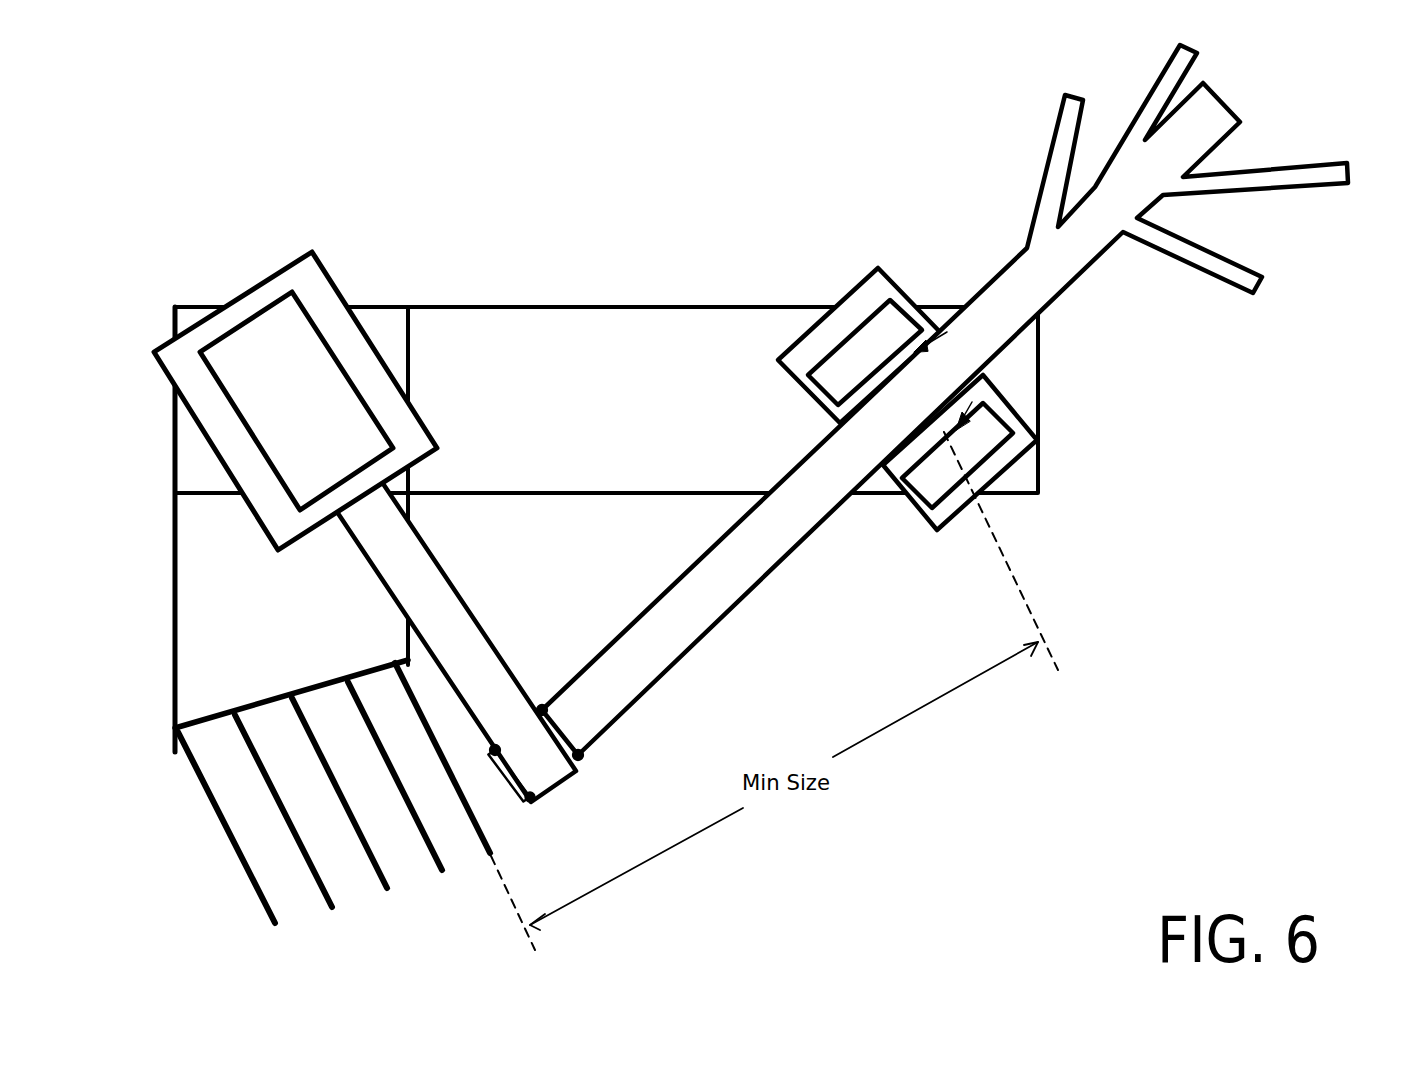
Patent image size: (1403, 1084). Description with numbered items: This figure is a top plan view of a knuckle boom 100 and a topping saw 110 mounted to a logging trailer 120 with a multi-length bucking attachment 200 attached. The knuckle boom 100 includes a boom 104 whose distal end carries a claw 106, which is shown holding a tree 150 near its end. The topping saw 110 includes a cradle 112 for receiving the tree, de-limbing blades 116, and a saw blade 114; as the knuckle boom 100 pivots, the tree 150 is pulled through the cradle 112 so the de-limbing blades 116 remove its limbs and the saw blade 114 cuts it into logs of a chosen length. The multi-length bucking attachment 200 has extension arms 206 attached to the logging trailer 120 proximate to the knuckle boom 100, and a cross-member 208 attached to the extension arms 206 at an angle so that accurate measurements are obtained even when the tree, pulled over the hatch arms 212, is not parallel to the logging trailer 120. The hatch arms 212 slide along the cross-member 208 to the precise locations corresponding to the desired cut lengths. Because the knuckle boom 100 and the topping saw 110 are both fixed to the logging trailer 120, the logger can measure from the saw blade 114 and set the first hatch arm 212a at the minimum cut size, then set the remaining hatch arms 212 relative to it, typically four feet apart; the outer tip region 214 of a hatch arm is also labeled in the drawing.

The knuckle boom 100 is at (233, 554).
The boom 104 is at (388, 585).
The claw 106 is at (580, 758).
The topping saw 110 is at (956, 572).
The cradle 112 is at (853, 403).
The saw blade 114 is at (900, 460).
The de-limbing blades 116 is at (960, 388).
The logging trailer 120 is at (582, 541).
The tree 150 is at (635, 702).
The multi-length bucking attachment 200 is at (291, 529).
The extension arms 206 is at (178, 592).
The cross-member 208 is at (275, 695).
The hatch arms 212 is at (356, 806).
The first hatch arm 212a is at (490, 860).
The prong tip 214 is at (252, 882).